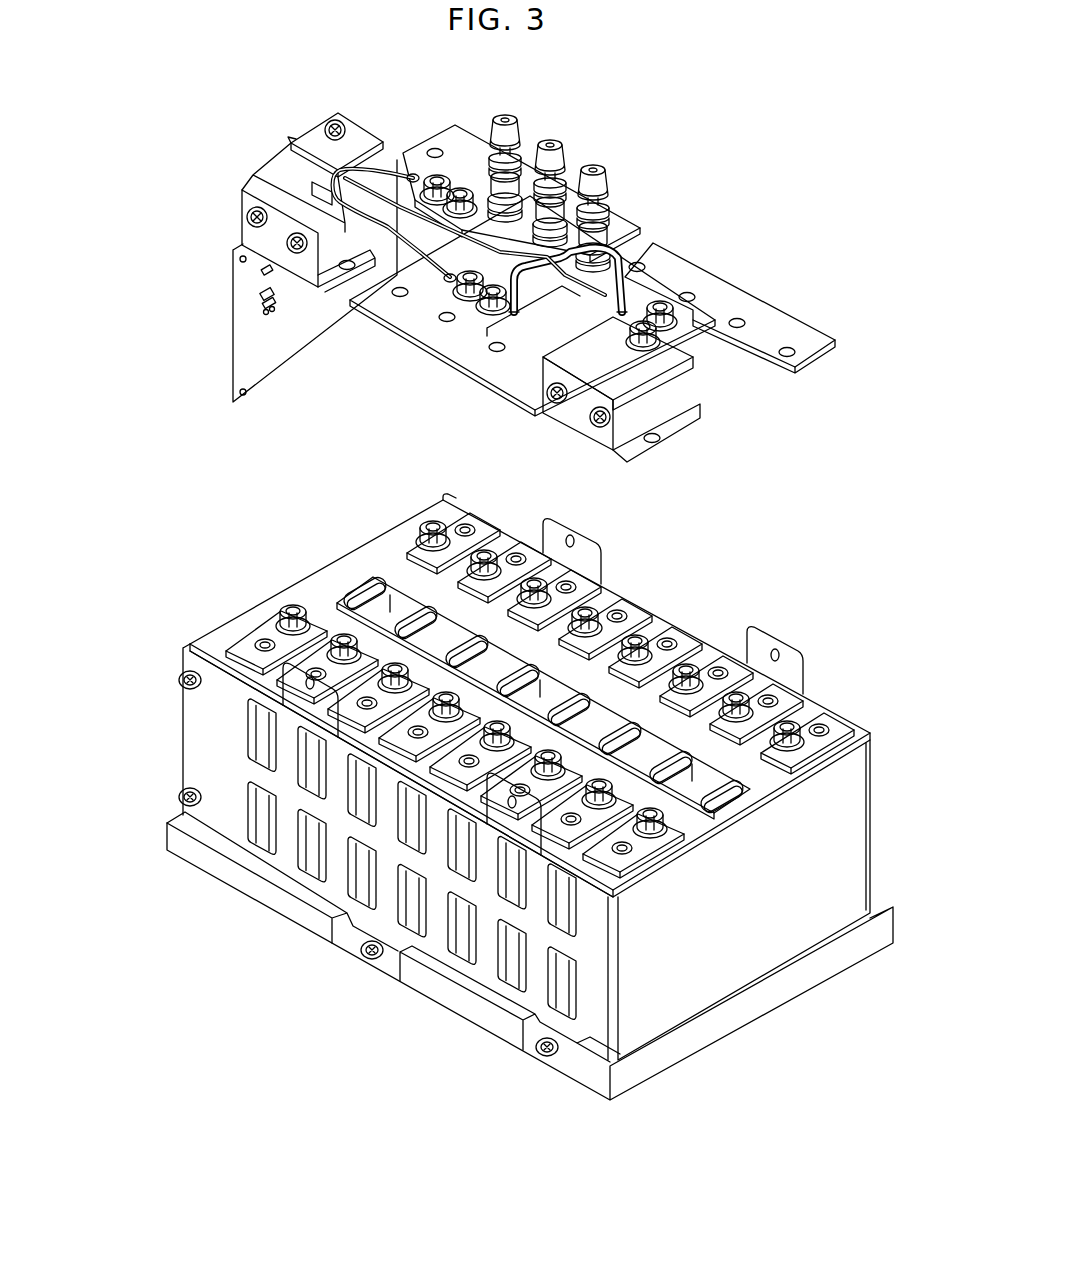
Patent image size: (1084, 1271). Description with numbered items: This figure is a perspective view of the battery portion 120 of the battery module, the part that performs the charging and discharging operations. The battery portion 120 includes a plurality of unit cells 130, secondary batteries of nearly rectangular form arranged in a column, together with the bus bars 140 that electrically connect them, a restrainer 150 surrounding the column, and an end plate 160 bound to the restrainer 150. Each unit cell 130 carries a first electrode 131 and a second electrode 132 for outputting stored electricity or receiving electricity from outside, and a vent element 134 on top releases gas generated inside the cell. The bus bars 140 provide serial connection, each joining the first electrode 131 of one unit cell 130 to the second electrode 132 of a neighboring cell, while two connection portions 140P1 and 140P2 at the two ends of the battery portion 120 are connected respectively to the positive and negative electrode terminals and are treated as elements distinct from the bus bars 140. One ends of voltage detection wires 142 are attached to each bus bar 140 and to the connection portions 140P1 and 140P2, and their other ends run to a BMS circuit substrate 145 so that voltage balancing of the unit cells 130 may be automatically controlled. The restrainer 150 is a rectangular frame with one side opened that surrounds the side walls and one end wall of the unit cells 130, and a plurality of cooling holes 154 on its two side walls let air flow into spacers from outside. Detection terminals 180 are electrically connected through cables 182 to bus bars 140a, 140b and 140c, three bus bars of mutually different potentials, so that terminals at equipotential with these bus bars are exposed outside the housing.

The battery portion 120 is at (163, 673).
The unit cells 130 is at (658, 748).
The first electrode 131 is at (835, 725).
The second electrode 132 is at (622, 845).
The vent element 134 is at (672, 768).
The bus bars 140 is at (830, 372).
The bus bar 140a is at (787, 325).
The bus bar 140b is at (447, 330).
The bus bar 140c is at (620, 232).
The connection portion 140P1 is at (648, 437).
The connection portion 140P2 is at (258, 240).
The voltage detection wires 142 is at (405, 290).
The BMS circuit substrate 145 is at (243, 320).
The restrainer 150 is at (200, 736).
The cooling holes 154 is at (258, 820).
The end plate 160 is at (200, 648).
The detection terminals 180 is at (598, 192).
The cables 182 is at (635, 282).